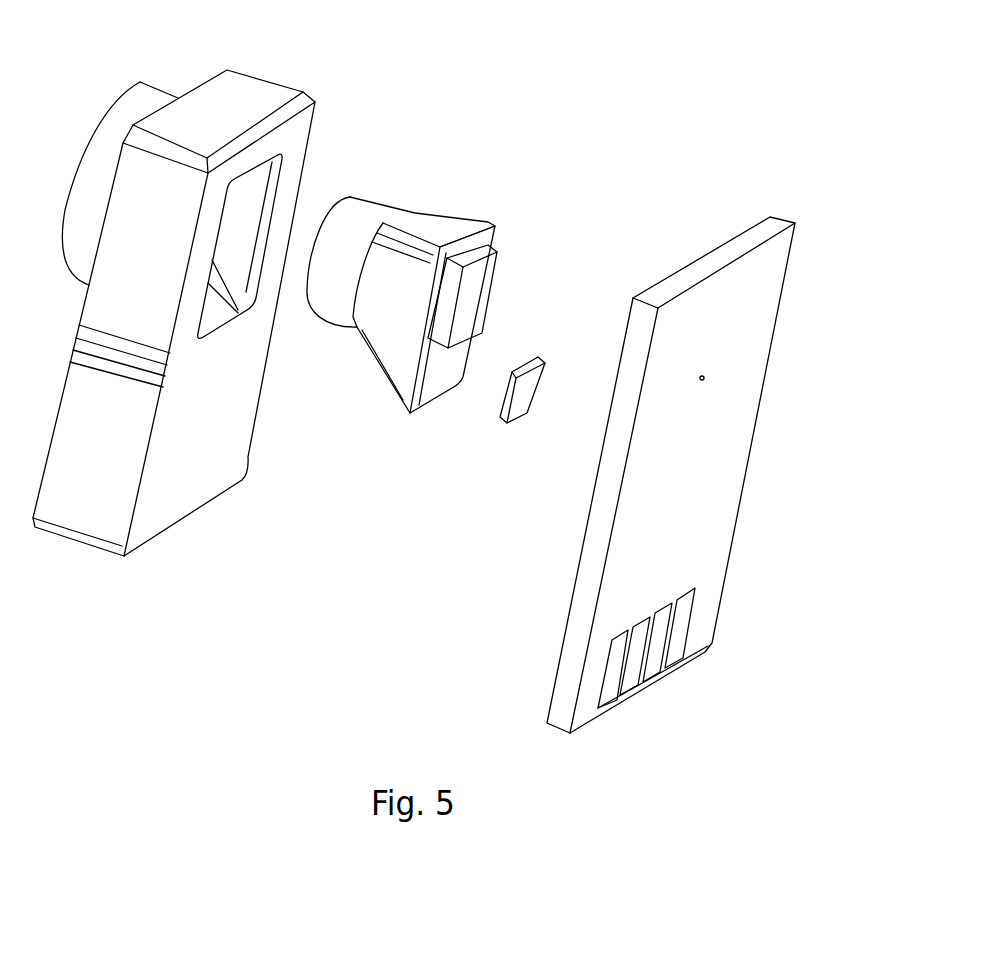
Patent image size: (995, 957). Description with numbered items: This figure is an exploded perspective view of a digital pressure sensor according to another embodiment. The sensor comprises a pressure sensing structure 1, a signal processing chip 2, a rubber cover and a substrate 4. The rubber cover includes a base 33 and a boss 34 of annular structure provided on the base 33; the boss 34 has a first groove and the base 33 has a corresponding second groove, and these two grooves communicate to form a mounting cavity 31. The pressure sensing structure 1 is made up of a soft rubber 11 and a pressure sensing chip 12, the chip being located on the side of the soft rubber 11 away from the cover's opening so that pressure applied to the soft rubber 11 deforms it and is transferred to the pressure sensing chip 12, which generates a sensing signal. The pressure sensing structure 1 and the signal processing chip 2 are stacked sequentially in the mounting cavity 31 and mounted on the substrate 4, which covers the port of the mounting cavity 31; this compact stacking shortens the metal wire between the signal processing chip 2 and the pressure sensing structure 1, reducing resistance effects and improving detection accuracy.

The pressure sensing structure 1 is at (450, 280).
The soft rubber 11 is at (415, 213).
The pressure sensing chip 12 is at (475, 208).
The signal processing chip 2 is at (500, 415).
The mounting cavity 31 is at (245, 205).
The base 33 is at (222, 108).
The boss 34 is at (140, 98).
The substrate 4 is at (750, 279).